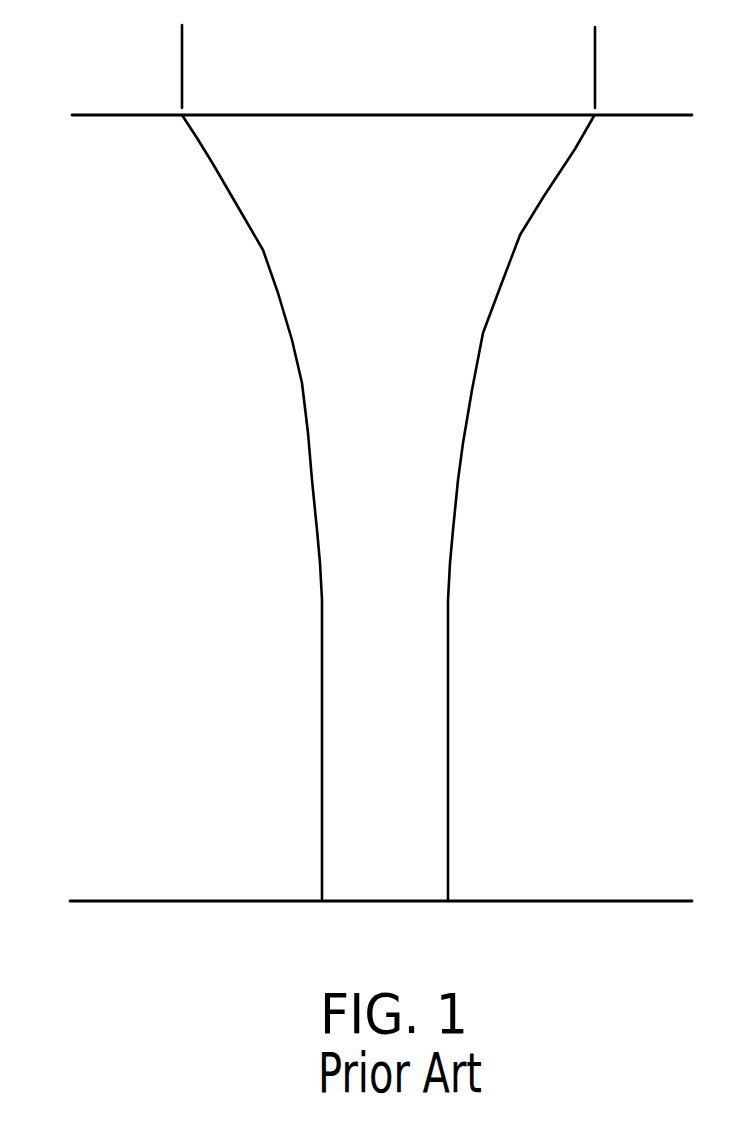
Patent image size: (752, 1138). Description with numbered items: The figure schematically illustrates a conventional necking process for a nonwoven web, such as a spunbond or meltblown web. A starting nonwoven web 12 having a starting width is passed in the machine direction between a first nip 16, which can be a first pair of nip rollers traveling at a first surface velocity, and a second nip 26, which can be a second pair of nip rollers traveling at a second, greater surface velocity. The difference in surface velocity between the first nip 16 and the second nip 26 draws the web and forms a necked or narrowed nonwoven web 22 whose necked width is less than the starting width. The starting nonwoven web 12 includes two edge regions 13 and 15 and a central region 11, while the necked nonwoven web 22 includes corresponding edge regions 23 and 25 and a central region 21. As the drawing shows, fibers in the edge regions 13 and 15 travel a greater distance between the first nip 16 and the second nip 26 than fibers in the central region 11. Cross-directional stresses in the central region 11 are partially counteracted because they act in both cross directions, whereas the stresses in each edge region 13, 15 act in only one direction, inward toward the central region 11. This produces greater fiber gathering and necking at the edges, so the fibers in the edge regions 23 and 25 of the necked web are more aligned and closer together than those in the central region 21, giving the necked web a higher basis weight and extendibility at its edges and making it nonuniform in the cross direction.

The central region 11 is at (398, 97).
The nonwoven web 12 is at (407, 69).
The edge region 13 is at (180, 45).
The edge region 15 is at (597, 49).
The first nip 16 is at (361, 117).
The central region 21 is at (377, 877).
The necked nonwoven web 22 is at (410, 826).
The edge region 23 is at (322, 826).
The edge region 25 is at (450, 840).
The second nip 26 is at (361, 899).